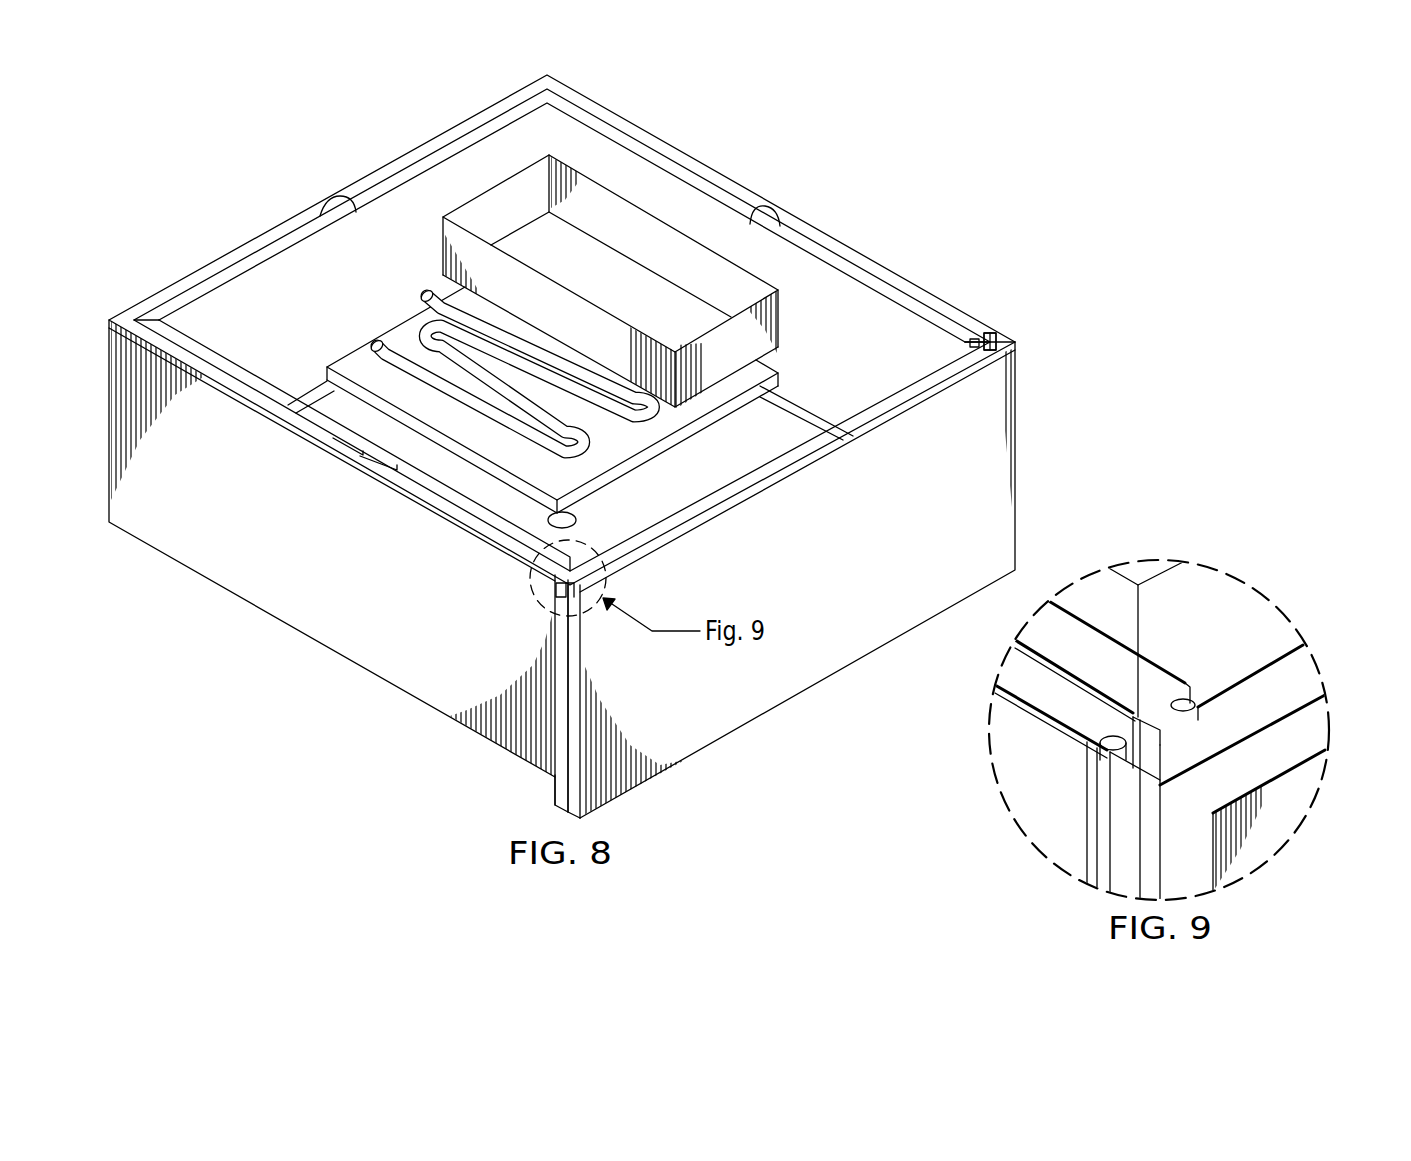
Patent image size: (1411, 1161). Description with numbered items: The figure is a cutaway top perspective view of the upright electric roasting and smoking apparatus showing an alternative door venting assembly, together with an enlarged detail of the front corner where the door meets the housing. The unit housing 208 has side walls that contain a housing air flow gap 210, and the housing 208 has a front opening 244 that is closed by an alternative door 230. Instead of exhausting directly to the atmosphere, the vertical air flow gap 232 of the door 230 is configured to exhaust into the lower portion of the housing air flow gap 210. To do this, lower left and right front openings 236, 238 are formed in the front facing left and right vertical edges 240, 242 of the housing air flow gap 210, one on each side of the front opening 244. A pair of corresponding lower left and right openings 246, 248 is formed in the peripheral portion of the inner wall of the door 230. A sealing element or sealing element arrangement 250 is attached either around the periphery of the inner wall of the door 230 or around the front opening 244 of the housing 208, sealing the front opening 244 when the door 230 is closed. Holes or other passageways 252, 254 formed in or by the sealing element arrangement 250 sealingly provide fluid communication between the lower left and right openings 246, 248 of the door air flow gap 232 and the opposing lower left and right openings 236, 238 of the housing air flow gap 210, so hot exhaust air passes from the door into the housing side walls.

In FIG. 9, the unit housing 208 is at (1019, 816).
In FIG. 9, the housing air flow gap 210 is at (1092, 702).
In FIG. 8, the alternative door 230 is at (791, 685).
In FIG. 9, the alternative door 230 is at (1293, 822).
In FIG. 8, the vertical air flow gap of the door 232 is at (852, 426).
In FIG. 9, the vertical air flow gap of the door 232 is at (1263, 684).
In FIG. 8, the lower left front opening 236 is at (500, 527).
In FIG. 9, the lower left front opening 236 is at (1117, 713).
In FIG. 8, the lower right front opening 238 is at (908, 305).
In FIG. 8, the front facing left vertical edge 240 is at (578, 540).
In FIG. 8, the front facing right vertical edge 242 is at (985, 360).
In FIG. 8, the front opening of the housing 244 is at (755, 470).
In FIG. 8, the lower left opening of the door 246 is at (575, 579).
In FIG. 9, the lower left opening of the door 246 is at (1152, 750).
In FIG. 8, the lower right opening of the door 248 is at (998, 332).
In FIG. 8, the sealing element arrangement 250 is at (988, 333).
In FIG. 9, the sealing element arrangement 250 is at (1107, 776).
In FIG. 8, the sealed passageway 252 is at (586, 596).
In FIG. 9, the sealed passageway 252 is at (1150, 768).
In FIG. 8, the sealed passageway 254 is at (965, 342).